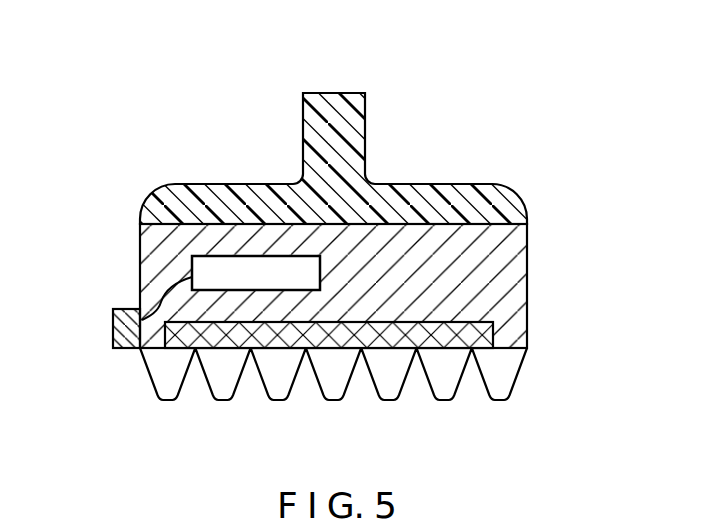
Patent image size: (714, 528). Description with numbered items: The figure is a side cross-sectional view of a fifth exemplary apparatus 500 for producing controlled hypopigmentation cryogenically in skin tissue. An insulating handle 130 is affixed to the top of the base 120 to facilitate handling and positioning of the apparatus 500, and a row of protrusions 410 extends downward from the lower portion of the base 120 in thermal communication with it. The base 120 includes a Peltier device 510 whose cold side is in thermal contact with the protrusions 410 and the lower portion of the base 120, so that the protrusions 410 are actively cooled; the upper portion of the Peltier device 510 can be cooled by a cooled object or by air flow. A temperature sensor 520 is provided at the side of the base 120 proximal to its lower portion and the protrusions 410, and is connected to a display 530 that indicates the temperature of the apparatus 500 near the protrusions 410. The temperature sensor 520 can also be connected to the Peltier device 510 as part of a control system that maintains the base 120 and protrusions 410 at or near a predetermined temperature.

The apparatus 500 is at (532, 138).
The insulating handle 130 is at (303, 91).
The base 120 is at (517, 267).
The Peltier device 510 is at (497, 318).
The display 530 is at (207, 253).
The temperature sensor 520 is at (128, 309).
The protrusions 410 is at (273, 401).